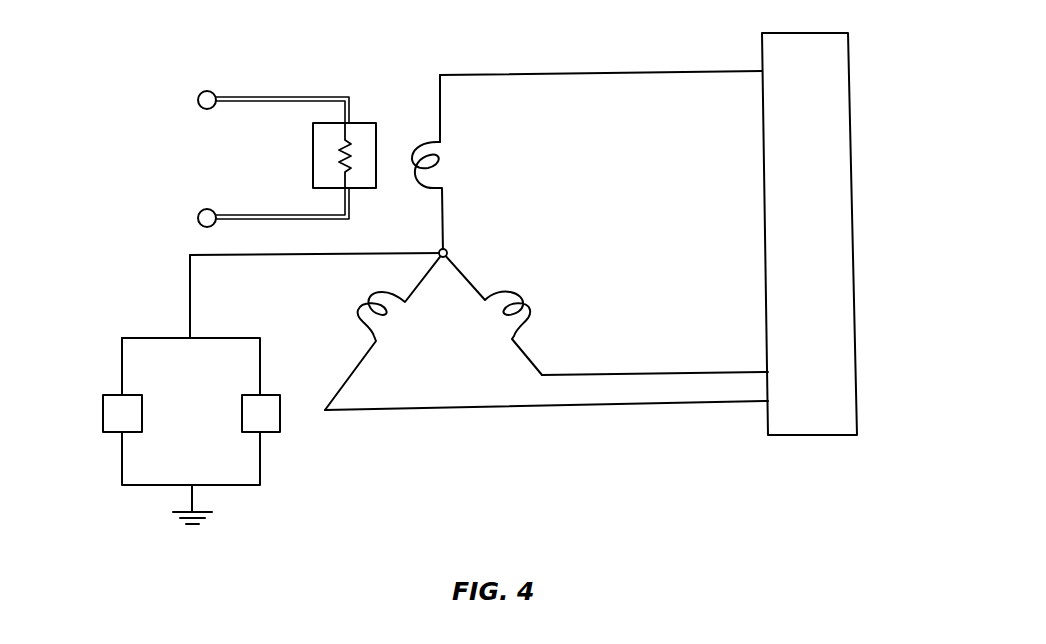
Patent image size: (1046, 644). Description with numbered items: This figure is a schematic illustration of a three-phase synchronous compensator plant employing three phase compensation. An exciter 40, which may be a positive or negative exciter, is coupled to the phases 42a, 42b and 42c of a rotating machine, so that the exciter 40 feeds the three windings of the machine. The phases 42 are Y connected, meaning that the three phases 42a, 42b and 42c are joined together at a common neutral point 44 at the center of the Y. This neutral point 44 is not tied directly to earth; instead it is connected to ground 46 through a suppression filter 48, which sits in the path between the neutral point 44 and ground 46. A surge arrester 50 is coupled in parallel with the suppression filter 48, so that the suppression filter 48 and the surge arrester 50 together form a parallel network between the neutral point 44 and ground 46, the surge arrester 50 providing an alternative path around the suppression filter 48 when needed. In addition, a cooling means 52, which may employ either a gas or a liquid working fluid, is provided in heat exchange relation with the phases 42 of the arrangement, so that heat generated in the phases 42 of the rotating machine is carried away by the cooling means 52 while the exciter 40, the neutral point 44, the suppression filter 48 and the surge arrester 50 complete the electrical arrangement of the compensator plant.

The exciter 40 is at (853, 231).
The phases 42 is at (490, 185).
The phase 42a is at (432, 188).
The phase 42b is at (356, 315).
The phase 42c is at (531, 310).
The neutral point 44 is at (447, 250).
The ground 46 is at (190, 524).
The suppression filter 48 is at (110, 393).
The surge arrester 50 is at (247, 390).
The cooling means 52 is at (362, 123).